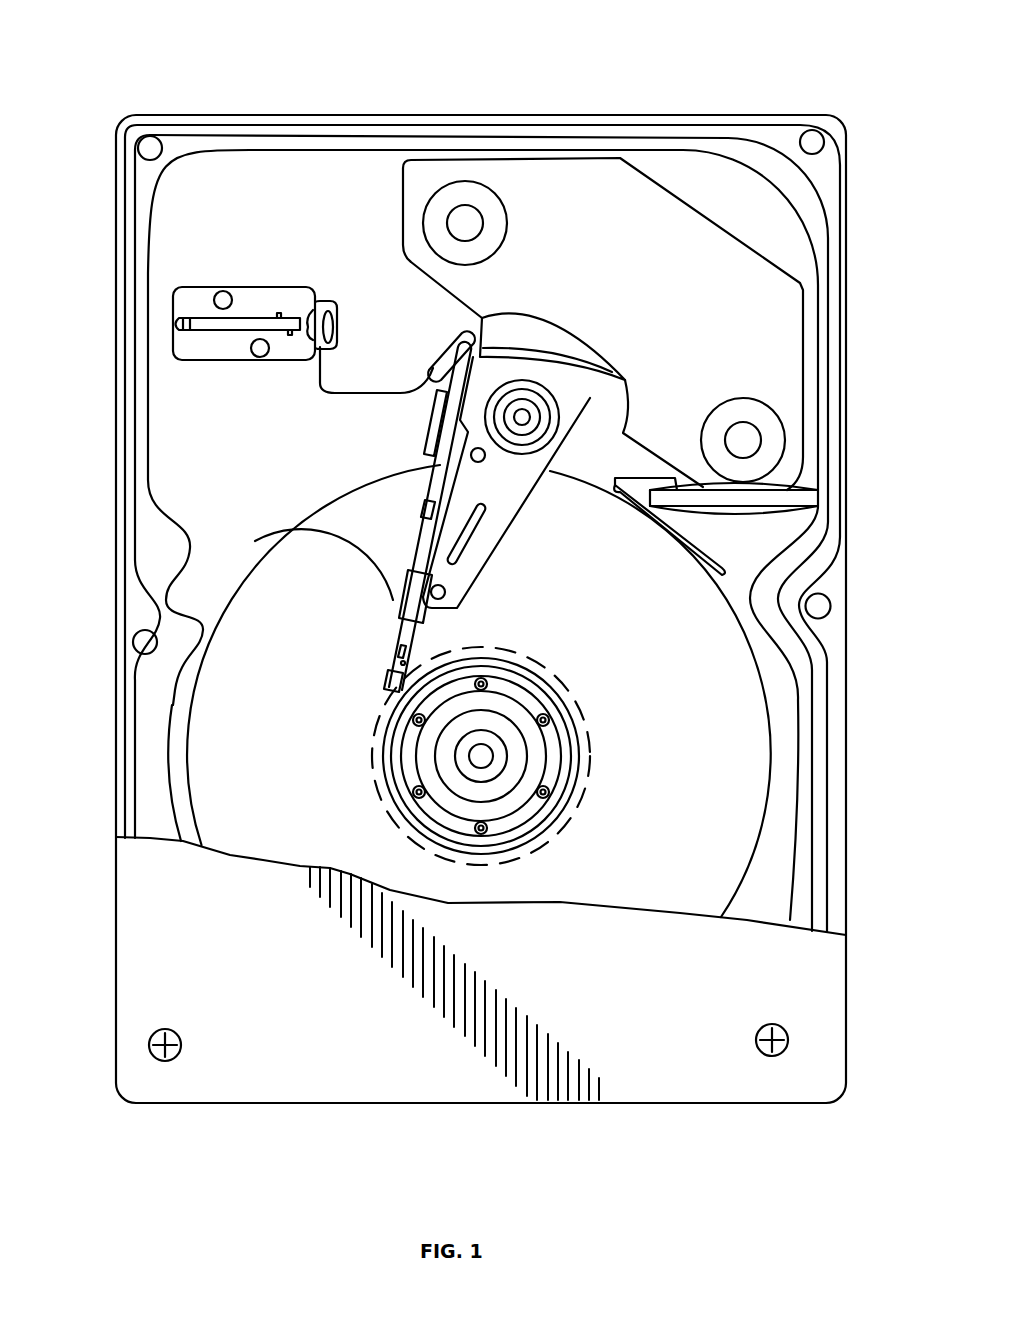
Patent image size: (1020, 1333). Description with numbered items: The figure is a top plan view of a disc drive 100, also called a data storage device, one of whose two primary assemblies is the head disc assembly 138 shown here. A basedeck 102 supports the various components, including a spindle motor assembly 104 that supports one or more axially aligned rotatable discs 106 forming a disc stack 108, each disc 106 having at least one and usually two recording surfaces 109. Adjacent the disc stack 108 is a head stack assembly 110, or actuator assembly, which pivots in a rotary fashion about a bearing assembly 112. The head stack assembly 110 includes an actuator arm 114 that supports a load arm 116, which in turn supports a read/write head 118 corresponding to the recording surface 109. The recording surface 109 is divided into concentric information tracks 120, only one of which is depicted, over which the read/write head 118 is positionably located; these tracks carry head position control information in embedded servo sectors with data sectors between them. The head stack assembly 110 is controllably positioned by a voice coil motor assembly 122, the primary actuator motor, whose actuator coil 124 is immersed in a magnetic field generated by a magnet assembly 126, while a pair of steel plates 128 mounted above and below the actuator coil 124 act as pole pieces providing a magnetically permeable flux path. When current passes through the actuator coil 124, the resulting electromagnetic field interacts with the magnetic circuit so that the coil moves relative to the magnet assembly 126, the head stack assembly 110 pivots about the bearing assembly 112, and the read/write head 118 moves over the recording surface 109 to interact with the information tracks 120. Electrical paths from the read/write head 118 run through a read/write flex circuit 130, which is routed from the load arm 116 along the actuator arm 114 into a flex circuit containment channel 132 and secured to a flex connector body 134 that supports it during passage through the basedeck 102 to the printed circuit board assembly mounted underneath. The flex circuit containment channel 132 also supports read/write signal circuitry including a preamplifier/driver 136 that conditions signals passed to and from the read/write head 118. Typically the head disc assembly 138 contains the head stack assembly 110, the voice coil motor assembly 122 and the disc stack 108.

The disc drive 100 is at (386, 88).
The basedeck 102 is at (315, 195).
The spindle motor assembly 104 is at (531, 698).
The rotatable disc 106 is at (772, 738).
The disc stack 108 is at (770, 776).
The recording surface 109 is at (675, 637).
The head stack assembly 110 is at (461, 522).
The bearing assembly 112 is at (568, 404).
The actuator arm 114 is at (453, 580).
The load arm 116 is at (393, 648).
The read/write head 118 is at (380, 678).
The information track 120 is at (570, 823).
The voice coil motor assembly 122 is at (789, 273).
The actuator coil 124 is at (525, 330).
The magnet assembly 126 is at (550, 180).
The steel plates 128 is at (775, 363).
The read/write flex circuit 130 is at (320, 388).
The flex circuit containment channel 132 is at (428, 507).
The flex connector body 134 is at (185, 352).
The preamplifier/driver 136 is at (440, 405).
The head disc assembly 138 is at (318, 1108).